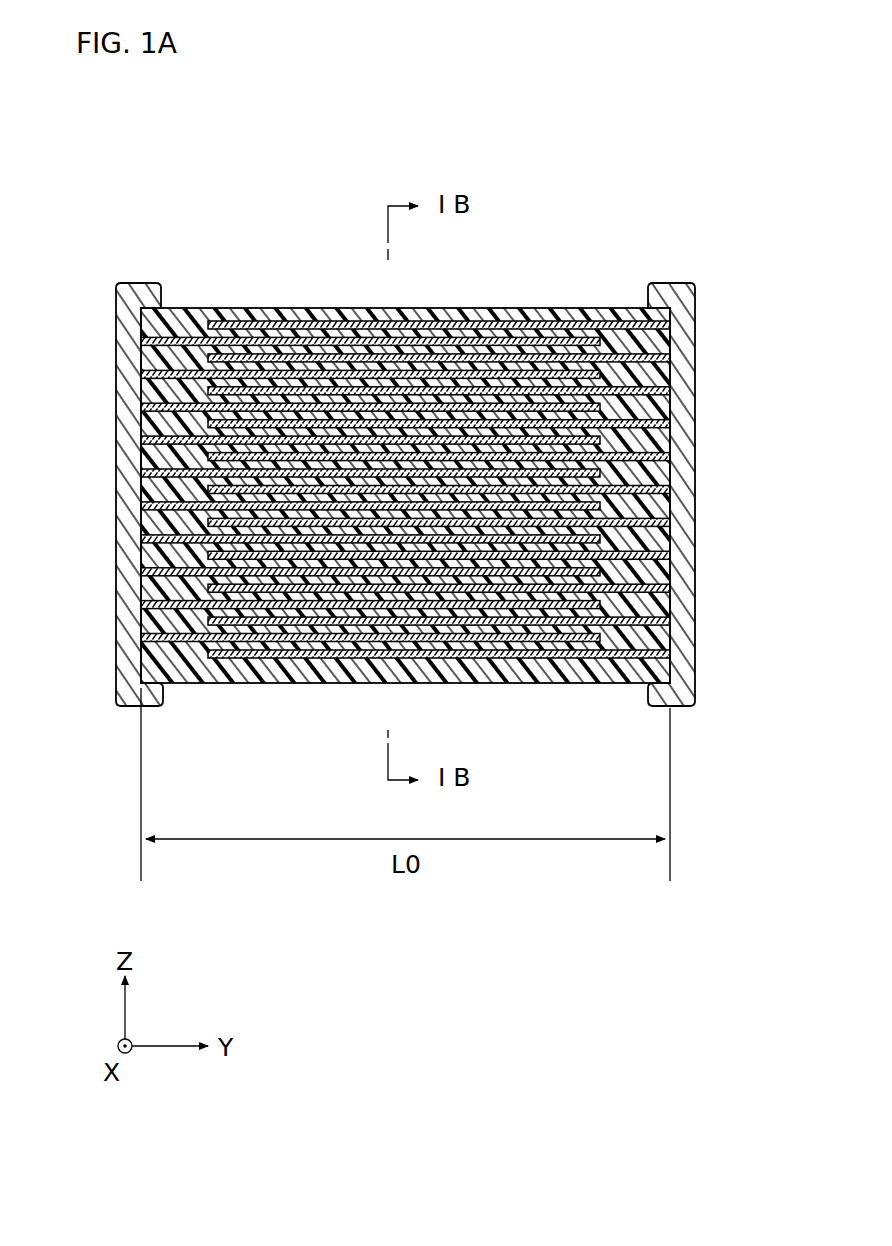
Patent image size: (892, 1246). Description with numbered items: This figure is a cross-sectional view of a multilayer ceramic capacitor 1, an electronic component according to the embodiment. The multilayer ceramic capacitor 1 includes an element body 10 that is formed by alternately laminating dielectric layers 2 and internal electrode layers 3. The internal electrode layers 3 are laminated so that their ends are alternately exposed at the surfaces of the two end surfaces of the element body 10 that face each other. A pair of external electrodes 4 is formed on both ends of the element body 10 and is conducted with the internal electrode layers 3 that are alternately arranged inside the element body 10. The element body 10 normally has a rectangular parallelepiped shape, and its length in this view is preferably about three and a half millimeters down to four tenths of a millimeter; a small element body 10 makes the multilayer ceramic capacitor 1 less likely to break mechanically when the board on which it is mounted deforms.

The multilayer ceramic capacitor 1 is at (383, 556).
The dielectric layers 2 is at (316, 306).
The internal electrode layers 3 is at (476, 304).
The external electrodes 4 is at (657, 276).
The element body 10 is at (428, 569).